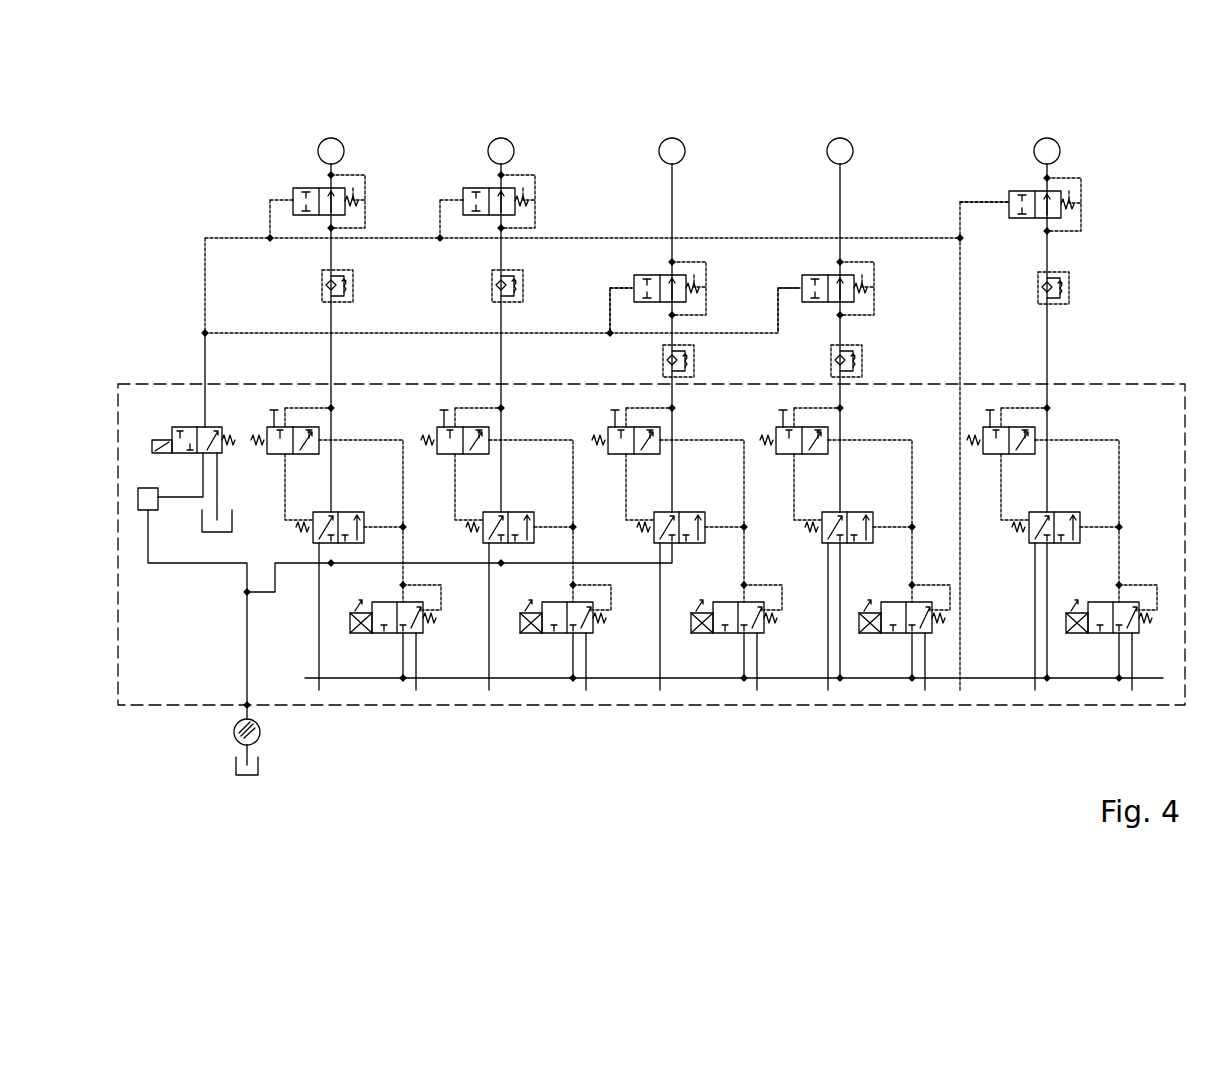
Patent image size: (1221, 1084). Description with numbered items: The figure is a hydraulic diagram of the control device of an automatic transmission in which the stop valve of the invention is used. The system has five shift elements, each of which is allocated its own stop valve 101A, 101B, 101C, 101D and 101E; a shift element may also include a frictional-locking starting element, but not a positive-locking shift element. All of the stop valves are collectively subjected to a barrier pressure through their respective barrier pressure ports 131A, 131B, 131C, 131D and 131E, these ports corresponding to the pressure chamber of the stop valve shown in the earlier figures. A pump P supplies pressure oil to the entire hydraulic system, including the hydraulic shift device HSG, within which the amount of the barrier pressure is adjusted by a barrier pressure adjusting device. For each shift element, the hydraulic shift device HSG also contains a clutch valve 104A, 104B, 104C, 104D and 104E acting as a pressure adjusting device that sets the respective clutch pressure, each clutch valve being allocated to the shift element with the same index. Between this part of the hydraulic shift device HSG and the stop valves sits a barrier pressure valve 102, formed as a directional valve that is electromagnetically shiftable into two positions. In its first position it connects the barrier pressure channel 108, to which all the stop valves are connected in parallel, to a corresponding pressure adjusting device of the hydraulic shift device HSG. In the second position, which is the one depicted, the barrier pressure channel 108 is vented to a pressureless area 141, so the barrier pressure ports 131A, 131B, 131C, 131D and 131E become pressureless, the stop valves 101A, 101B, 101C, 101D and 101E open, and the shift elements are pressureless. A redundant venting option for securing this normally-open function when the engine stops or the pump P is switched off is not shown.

The barrier pressure port 131A is at (290, 199).
The barrier pressure port 131B is at (460, 199).
The barrier pressure port 131C is at (626, 288).
The barrier pressure port 131D is at (798, 288).
The barrier pressure port 131E is at (1004, 202).
The stop valve 101A is at (312, 185).
The stop valve 101B is at (486, 180).
The stop valve 101C is at (682, 262).
The stop valve 101D is at (850, 262).
The stop valve 101E is at (1057, 185).
The clutch valve 104A is at (338, 548).
The clutch valve 104B is at (510, 548).
The clutch valve 104C is at (677, 548).
The clutch valve 104D is at (820, 548).
The clutch valve 104E is at (1027, 548).
The barrier pressure valve 102 is at (195, 425).
The barrier pressure channel 108 is at (238, 240).
The pressureless area 141 is at (217, 535).
The pump P is at (259, 739).
The hydraulic shift device HSG is at (1030, 708).